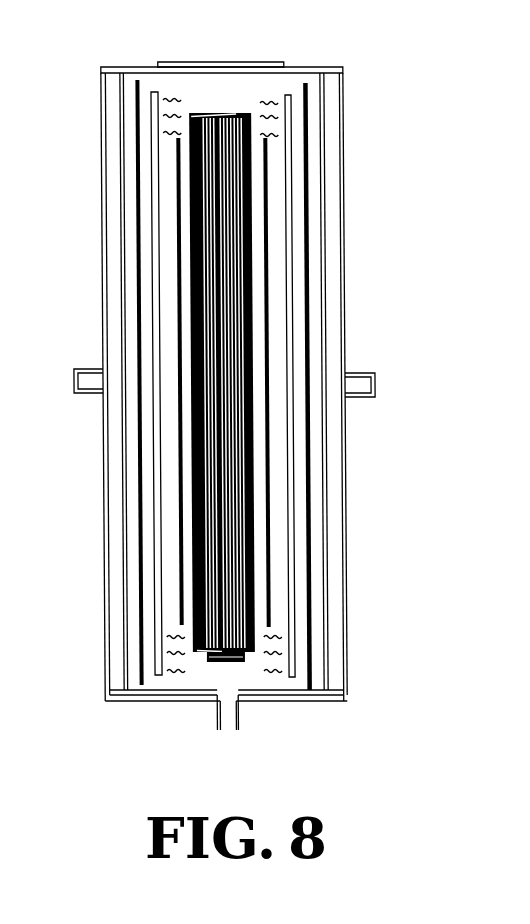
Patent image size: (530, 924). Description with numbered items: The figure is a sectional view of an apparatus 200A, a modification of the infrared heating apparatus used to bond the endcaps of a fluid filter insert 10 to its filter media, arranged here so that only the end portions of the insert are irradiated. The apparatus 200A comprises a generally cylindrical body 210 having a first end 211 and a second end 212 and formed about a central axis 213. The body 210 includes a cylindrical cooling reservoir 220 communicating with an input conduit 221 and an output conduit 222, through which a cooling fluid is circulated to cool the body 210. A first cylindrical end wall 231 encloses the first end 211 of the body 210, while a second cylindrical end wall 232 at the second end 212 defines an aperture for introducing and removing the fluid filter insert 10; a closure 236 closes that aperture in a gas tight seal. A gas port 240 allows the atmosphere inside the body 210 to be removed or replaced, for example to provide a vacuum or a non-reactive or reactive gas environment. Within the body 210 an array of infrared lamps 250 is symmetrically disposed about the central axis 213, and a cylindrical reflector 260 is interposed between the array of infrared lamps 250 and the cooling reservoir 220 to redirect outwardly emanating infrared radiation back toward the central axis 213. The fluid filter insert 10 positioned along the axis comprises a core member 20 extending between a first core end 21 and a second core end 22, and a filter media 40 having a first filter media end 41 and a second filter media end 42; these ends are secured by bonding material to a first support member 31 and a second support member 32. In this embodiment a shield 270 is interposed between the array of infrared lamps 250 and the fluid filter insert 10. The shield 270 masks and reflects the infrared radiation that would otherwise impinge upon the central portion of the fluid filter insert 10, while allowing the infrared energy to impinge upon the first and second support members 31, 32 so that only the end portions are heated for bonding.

The apparatus 200A is at (287, 50).
The fluid filter insert 10 is at (253, 238).
The core member 20 is at (253, 282).
The first core end 21 is at (258, 644).
The second core end 22 is at (255, 134).
The first support member 31 is at (244, 657).
The second support member 32 is at (252, 118).
The filter media 40 is at (253, 323).
The first filter media end 41 is at (257, 633).
The second filter media end 42 is at (252, 153).
The body 210 is at (105, 462).
The first end 211 is at (105, 655).
The second end 212 is at (100, 103).
The central axis 213 is at (222, 555).
The cooling reservoir 220 is at (118, 264).
The input conduit 221 is at (88, 383).
The output conduit 222 is at (353, 383).
The first cylindrical end wall 231 is at (160, 698).
The second cylindrical end wall 232 is at (128, 69).
The closure 236 is at (242, 64).
The gas port 240 is at (235, 720).
The array of infrared lamps 250 is at (153, 206).
The cylindrical reflector 260 is at (137, 314).
The shield 270 is at (178, 161).